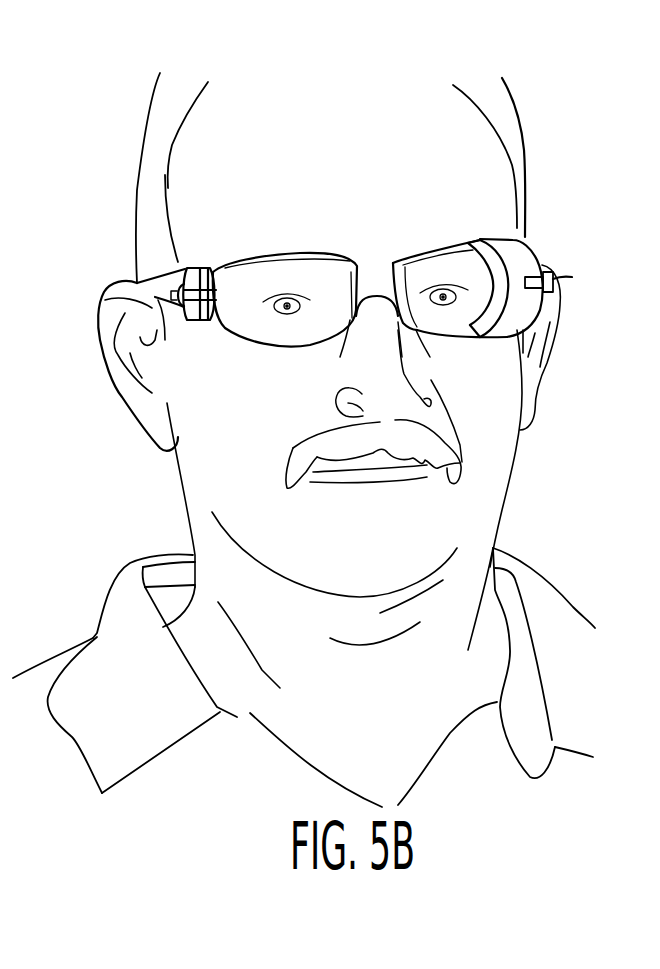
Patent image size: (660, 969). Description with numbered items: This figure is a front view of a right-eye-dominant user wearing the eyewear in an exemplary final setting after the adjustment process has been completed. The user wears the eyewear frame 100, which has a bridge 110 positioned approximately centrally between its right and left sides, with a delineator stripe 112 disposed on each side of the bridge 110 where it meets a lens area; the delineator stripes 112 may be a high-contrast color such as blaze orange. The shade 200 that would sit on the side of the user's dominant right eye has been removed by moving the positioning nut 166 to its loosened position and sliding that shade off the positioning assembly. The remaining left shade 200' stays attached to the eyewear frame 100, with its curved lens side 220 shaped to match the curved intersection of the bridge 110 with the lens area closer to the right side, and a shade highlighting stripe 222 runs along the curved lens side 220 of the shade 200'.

The eyewear frame 100 is at (224, 253).
The bridge 110 is at (375, 270).
The delineator stripe 112 is at (408, 330).
The positioning nut 166 is at (556, 282).
The shade 200 is at (536, 184).
The left shade 200' is at (536, 184).
The curved lens side 220 is at (466, 184).
The shade highlighting stripe 222 is at (466, 243).